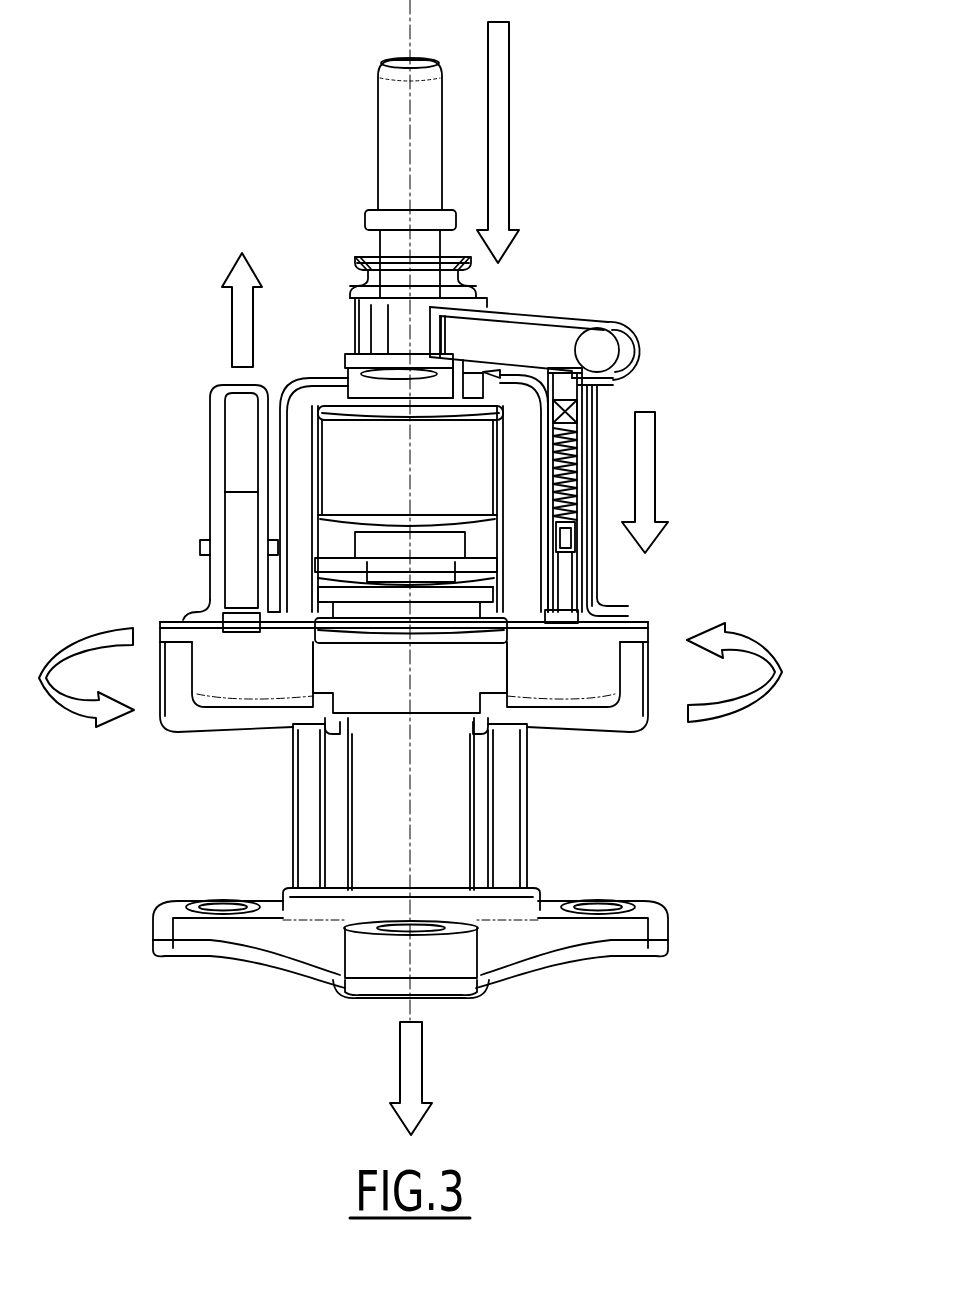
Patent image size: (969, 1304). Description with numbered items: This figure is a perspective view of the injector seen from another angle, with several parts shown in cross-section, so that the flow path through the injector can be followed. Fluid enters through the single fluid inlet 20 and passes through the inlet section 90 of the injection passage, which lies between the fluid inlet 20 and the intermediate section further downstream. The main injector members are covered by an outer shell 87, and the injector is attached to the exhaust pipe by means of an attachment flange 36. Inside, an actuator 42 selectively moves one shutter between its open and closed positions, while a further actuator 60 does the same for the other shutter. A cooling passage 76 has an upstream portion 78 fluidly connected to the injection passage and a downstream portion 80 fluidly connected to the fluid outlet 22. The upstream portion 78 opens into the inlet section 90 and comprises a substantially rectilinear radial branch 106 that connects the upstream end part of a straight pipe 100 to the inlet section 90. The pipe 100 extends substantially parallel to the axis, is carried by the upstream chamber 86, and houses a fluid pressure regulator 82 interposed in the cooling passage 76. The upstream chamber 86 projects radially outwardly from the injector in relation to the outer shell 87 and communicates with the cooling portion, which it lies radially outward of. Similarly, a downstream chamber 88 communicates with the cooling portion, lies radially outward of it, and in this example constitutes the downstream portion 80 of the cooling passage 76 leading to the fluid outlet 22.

The fluid inlet 20 is at (400, 121).
The fluid outlet 22 is at (225, 428).
The attachment flange 36 is at (570, 945).
The actuator 42 is at (389, 708).
The further actuator 60 is at (375, 473).
The cooling passage 76 is at (630, 402).
The upstream portion 78 is at (614, 298).
The downstream portion 80 is at (188, 600).
The fluid pressure regulator 82 is at (595, 452).
The upstream chamber 86 is at (582, 718).
The outer shell 87 is at (493, 372).
The downstream chamber 88 is at (205, 678).
The inlet section 90 is at (405, 331).
The pipe 100 is at (583, 582).
The radial branch 106 is at (547, 343).